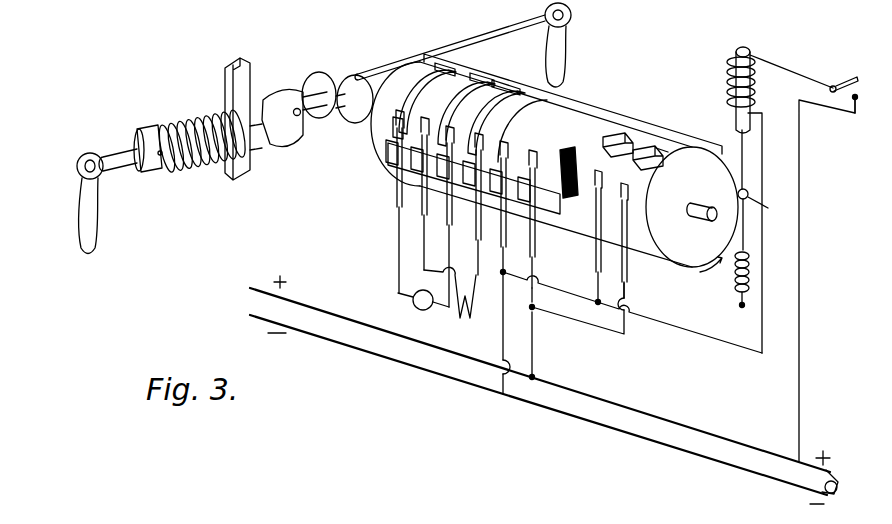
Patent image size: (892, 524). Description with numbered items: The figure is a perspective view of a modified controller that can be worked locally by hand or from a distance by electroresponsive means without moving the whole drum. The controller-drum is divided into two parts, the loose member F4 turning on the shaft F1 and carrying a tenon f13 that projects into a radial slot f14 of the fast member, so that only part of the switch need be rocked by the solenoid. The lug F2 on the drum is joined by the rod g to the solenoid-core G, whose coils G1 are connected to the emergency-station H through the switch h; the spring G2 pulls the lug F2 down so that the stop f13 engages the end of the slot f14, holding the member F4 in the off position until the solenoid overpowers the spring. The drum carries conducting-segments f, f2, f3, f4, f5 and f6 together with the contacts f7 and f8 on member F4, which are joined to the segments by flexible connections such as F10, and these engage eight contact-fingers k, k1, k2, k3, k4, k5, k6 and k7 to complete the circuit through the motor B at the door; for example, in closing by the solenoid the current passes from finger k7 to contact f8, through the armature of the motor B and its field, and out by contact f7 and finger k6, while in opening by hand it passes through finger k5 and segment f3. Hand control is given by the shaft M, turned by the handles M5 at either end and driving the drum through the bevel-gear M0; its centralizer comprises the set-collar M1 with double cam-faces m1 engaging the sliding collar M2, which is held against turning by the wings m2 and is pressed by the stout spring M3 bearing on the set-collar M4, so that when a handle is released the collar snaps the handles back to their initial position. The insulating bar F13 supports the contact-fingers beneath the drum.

The shaft M is at (491, 33).
The handles M5 is at (578, 31).
The set-collar M4 is at (150, 128).
The spring M3 is at (187, 121).
The wings m2 is at (228, 81).
The sliding collar M2 is at (258, 134).
The double cam-faces m1 is at (272, 93).
The set-collar M1 is at (297, 116).
The bevel-gear M0 is at (319, 71).
The flexible connection F10 is at (370, 63).
The insulating bar F13 is at (385, 158).
The conducting-segment f is at (393, 163).
The conducting-segment f2 is at (492, 195).
The conducting-segment f3 is at (536, 218).
The conducting-segment f4 is at (421, 89).
The conducting-segment f5 is at (473, 99).
The conducting-segment f6 is at (497, 120).
The contact f7 is at (621, 143).
The contact f8 is at (659, 141).
The tenon f13 is at (587, 143).
The radial slot f14 is at (574, 200).
The contact-finger k is at (398, 117).
The contact-finger k1 is at (427, 102).
The contact-finger k2 is at (466, 114).
The contact-finger k3 is at (494, 156).
The contact-finger k4 is at (513, 145).
The contact-finger k5 is at (553, 217).
The contact-finger k6 is at (593, 232).
The contact-finger k7 is at (636, 233).
The motor B is at (423, 316).
The drum member F4 is at (706, 162).
The shaft F1 is at (725, 189).
The lug F2 is at (748, 198).
The rod g is at (744, 160).
The solenoid-core G is at (752, 54).
The solenoid-coils G1 is at (757, 88).
The spring G2 is at (737, 277).
The switch h is at (844, 72).
The emergency-station H is at (847, 118).